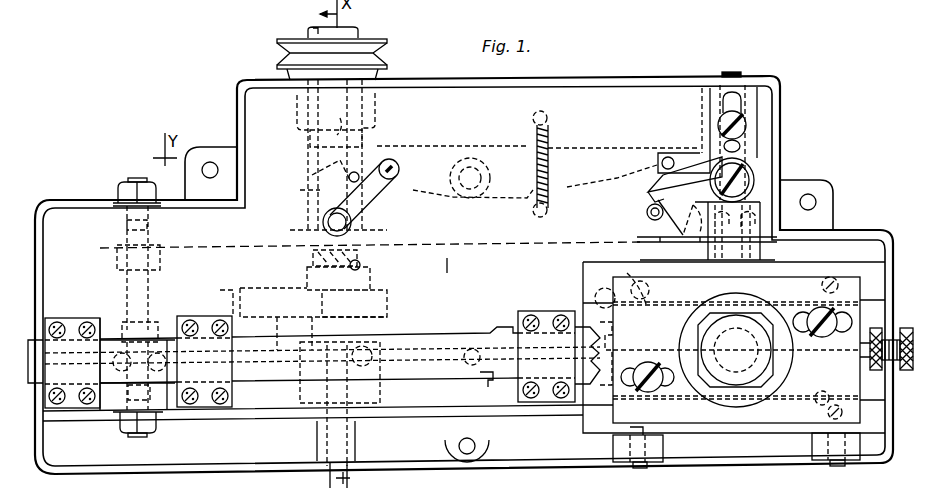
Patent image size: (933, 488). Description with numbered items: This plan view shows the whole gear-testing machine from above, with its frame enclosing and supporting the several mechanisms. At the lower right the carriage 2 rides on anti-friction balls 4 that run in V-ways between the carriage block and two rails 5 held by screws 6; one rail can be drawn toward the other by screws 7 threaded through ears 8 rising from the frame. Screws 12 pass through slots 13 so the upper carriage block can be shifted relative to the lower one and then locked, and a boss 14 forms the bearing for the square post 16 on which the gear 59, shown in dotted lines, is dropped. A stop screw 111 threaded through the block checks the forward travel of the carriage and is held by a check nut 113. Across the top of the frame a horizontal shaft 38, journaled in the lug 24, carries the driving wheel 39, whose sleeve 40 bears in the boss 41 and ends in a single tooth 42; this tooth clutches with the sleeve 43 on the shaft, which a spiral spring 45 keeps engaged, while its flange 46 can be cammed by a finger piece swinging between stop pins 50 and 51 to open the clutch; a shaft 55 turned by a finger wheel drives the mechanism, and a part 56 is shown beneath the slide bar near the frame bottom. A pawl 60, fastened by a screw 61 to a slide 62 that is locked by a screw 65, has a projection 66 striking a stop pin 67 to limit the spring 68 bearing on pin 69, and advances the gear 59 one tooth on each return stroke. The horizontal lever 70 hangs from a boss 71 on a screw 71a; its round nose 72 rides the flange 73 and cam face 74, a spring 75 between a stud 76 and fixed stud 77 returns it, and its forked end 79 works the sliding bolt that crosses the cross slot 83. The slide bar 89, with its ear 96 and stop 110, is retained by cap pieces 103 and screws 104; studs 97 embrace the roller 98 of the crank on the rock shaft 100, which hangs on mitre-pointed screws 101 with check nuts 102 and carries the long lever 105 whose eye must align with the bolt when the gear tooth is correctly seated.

The carriage 2 is at (736, 350).
The anti-friction balls 4 is at (655, 300).
The rails 5 is at (872, 349).
The screws 6 is at (828, 412).
The screws 7 is at (640, 470).
The ears 8 is at (663, 445).
The screws 12 is at (815, 310).
The slots 13 is at (843, 332).
The boss 14 is at (736, 350).
The post 16 is at (734, 375).
The lug 24 is at (250, 290).
The shaft 38 is at (322, 306).
The driving wheel 39 is at (372, 41).
The sleeve 40 is at (375, 108).
The boss 41 is at (296, 117).
The tooth 42 is at (333, 119).
The sleeve 43 is at (308, 206).
The spiral spring 45 is at (313, 260).
The flange 46 is at (384, 231).
The stop pin 50 is at (350, 205).
The stop pin 51 is at (362, 264).
The shaft 55 is at (351, 475).
The slide block 56 is at (312, 386).
The gear 59 is at (638, 262).
The pawl 60 is at (685, 179).
The screw 61 is at (755, 178).
The slide 62 is at (753, 100).
The screw 65 is at (745, 125).
The projection 66 is at (652, 190).
The stop pin 67 is at (648, 209).
The spring 68 is at (687, 157).
The pin 69 is at (660, 162).
The lever 70 is at (420, 186).
The boss 71 is at (447, 158).
The screw 71a is at (472, 165).
The round nose 72 is at (314, 174).
The flange 73 is at (294, 192).
The cam face 74 is at (374, 170).
The spring 75 is at (550, 170).
The stud 76 is at (552, 206).
The stud 77 is at (545, 122).
The fork 79 is at (740, 147).
The cross slot 83 is at (778, 240).
The slide bar 89 is at (433, 329).
The ear 96 is at (490, 379).
The studs 97 is at (120, 355).
The roller 98 is at (135, 365).
The rock shaft 100 is at (148, 295).
The mitre-pointed screws 101 is at (138, 180).
The check nuts 102 is at (117, 192).
The cap pieces 103 is at (310, 359).
The screws 104 is at (87, 325).
The lever 105 is at (497, 240).
The stop 110 is at (500, 328).
The stop screw 111 is at (890, 342).
The check nut 113 is at (876, 370).